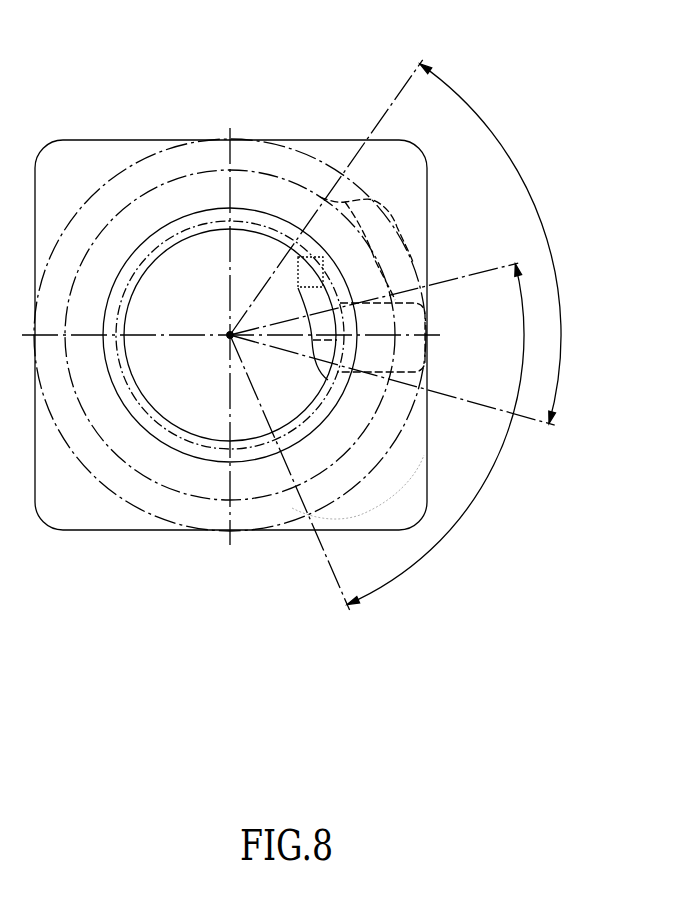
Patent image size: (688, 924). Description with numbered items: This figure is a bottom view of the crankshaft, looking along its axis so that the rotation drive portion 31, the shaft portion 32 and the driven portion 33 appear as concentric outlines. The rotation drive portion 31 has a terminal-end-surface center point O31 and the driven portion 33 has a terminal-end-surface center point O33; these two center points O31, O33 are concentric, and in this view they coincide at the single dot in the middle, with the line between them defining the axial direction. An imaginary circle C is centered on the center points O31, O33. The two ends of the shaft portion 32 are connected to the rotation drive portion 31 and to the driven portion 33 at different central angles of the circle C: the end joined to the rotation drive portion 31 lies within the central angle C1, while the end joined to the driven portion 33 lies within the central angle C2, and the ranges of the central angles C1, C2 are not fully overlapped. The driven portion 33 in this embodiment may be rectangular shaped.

The rotation drive portion 31 is at (190, 230).
The shaft portion 32 is at (303, 297).
The driven portion 33 is at (347, 153).
The terminal-end-surface center point O31 is at (230, 335).
The terminal-end-surface center point O33 is at (168, 505).
The circle C is at (207, 500).
The central angle C1 is at (492, 244).
The central angle C2 is at (435, 434).